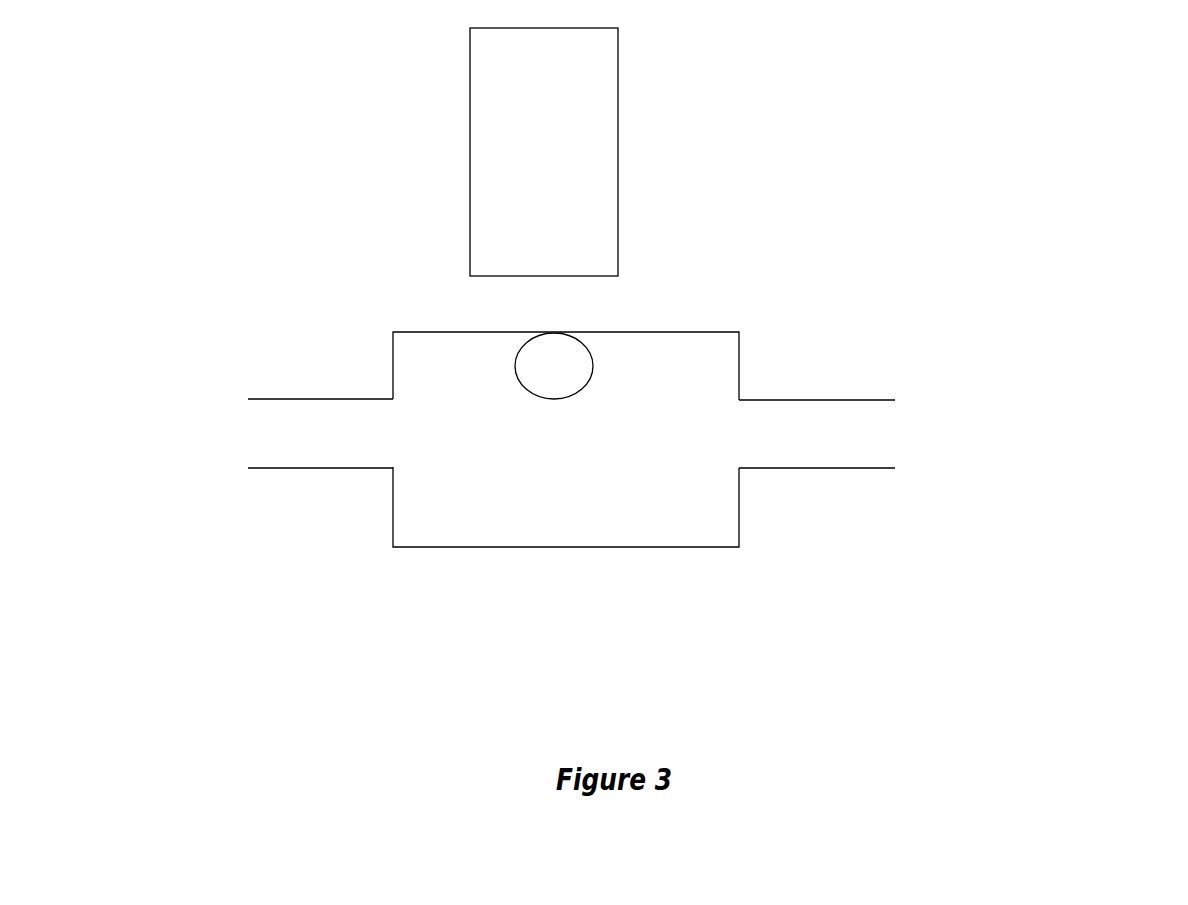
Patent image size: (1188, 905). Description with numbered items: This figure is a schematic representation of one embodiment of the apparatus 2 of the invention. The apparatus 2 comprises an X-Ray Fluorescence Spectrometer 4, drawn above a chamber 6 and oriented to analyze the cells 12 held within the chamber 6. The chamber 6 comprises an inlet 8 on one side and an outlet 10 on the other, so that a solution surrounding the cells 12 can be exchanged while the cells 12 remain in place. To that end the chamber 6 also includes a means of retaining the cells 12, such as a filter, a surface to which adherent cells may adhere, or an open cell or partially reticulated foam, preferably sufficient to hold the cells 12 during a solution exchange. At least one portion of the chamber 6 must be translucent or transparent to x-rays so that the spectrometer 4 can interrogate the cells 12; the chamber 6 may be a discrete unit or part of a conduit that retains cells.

The apparatus 2 is at (650, 391).
The X-Ray Fluorescence Spectrometer 4 is at (622, 151).
The chamber 6 is at (565, 551).
The inlet 8 is at (326, 396).
The outlet 10 is at (826, 471).
The cells 12 is at (598, 367).